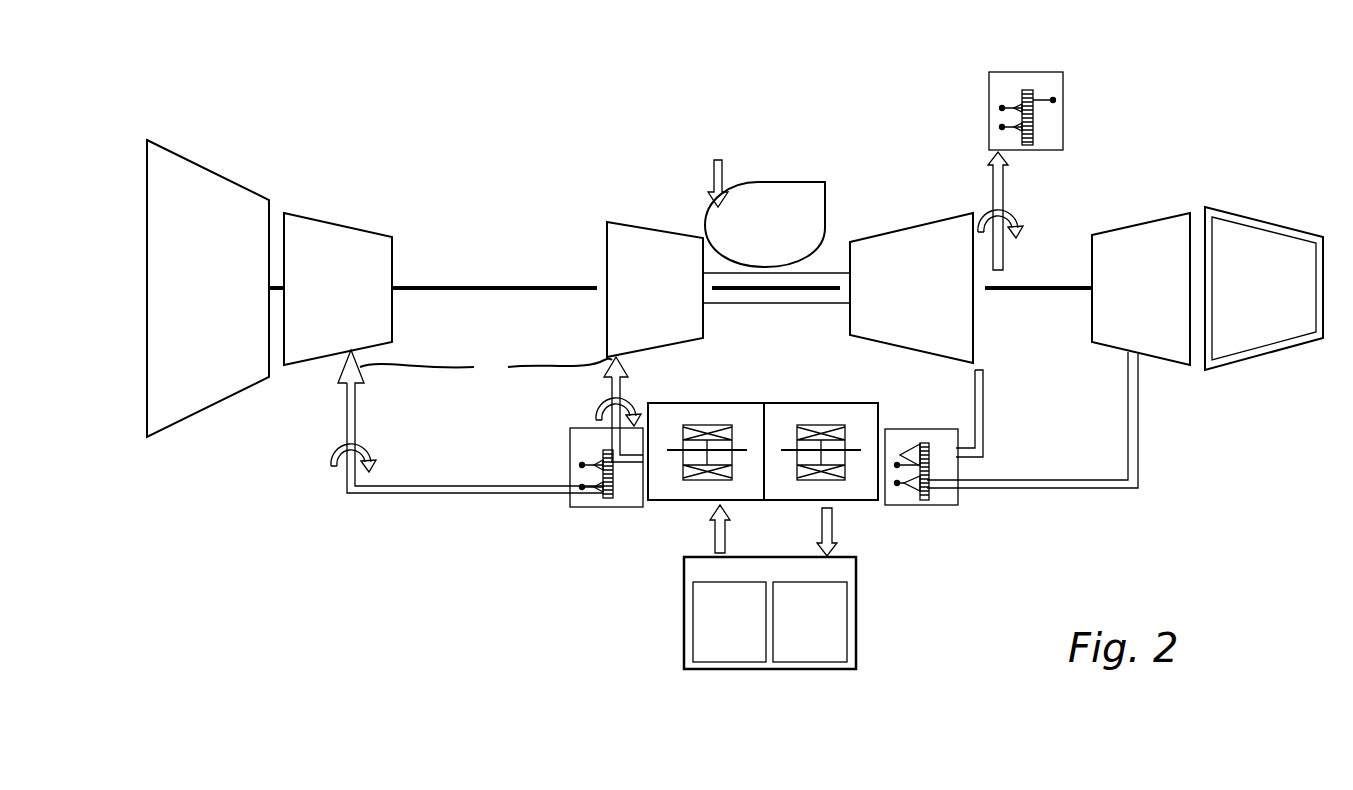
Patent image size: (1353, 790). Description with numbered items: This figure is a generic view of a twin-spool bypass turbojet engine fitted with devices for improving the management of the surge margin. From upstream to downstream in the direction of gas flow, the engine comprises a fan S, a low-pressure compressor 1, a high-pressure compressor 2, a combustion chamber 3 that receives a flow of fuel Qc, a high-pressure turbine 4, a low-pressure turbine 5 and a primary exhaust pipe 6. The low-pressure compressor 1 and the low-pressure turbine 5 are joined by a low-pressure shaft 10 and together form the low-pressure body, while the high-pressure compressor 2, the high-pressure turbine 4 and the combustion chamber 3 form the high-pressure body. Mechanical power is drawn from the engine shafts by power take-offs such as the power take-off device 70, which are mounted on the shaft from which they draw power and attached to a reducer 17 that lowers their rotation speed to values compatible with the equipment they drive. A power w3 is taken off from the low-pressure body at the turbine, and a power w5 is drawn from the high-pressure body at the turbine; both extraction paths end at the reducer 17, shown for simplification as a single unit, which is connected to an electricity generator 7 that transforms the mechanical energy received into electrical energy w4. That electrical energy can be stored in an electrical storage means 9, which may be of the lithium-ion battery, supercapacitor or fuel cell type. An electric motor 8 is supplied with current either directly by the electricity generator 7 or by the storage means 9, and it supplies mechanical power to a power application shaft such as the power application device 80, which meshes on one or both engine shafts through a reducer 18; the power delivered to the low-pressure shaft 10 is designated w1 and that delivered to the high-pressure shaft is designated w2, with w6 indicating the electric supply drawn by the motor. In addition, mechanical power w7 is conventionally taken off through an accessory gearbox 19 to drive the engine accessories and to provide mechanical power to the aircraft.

The fan S is at (197, 188).
The low-pressure compressor 1 is at (322, 238).
The high-pressure compressor 2 is at (638, 243).
The combustion chamber 3 is at (777, 202).
The high-pressure turbine 4 is at (913, 240).
The low-pressure turbine 5 is at (1142, 237).
The primary exhaust pipe 6 is at (1265, 243).
The electricity generator 7 is at (848, 400).
The electric motor 8 is at (660, 502).
The electrical storage means 9 is at (857, 642).
The low-pressure shaft 10 is at (478, 286).
The reducer 17 is at (943, 505).
The reducer 18 is at (579, 507).
The accessory gearbox 19 is at (1063, 83).
The power take-off device 70 is at (1128, 413).
The power application device 80 is at (486, 361).
The flow of fuel Qc is at (700, 175).
The mechanical power delivered to the LP shaft w1 is at (467, 421).
The mechanical power delivered to the HP shaft w2 is at (631, 409).
The power taken off from the LP body w3 is at (1071, 508).
The electrical energy w4 is at (843, 532).
The power drawn from the HP body w5 is at (958, 413).
The electric power flow w6 is at (701, 529).
The mechanical power for accessories w7 is at (1009, 211).